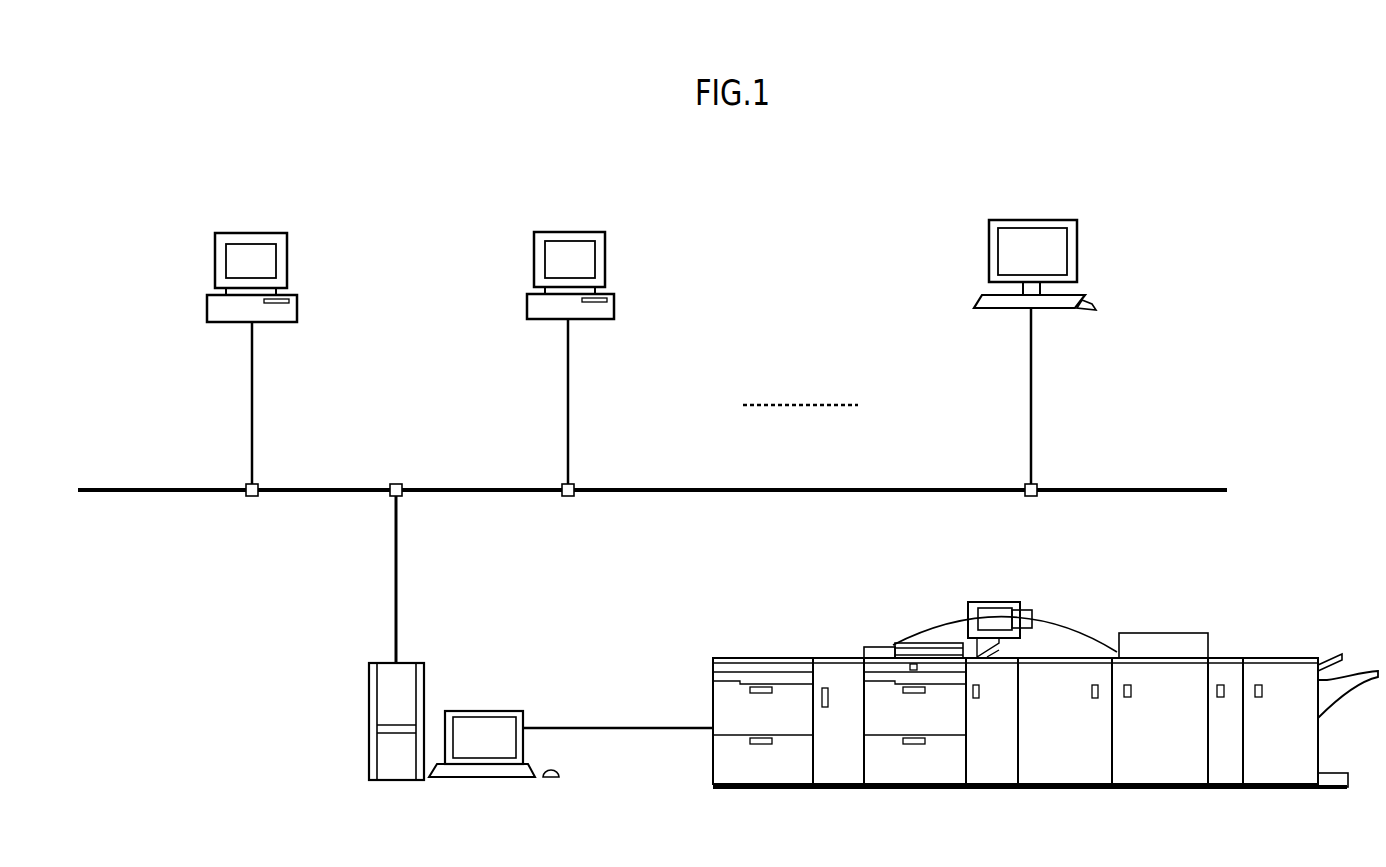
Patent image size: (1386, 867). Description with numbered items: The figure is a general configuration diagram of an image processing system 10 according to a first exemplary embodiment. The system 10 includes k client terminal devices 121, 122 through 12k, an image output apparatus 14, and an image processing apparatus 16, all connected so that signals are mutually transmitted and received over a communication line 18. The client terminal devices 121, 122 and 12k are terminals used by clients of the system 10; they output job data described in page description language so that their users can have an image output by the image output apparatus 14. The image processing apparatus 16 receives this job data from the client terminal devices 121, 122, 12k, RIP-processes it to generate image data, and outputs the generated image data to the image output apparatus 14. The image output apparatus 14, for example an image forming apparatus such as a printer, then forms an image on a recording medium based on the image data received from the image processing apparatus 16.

The image processing system 10 is at (1183, 167).
The client terminal device 121 is at (262, 233).
The client terminal device 122 is at (581, 232).
The client terminal device 12k is at (1047, 220).
The image output apparatus 14 is at (1168, 632).
The image processing apparatus 16 is at (370, 705).
The communication line 18 is at (1100, 483).